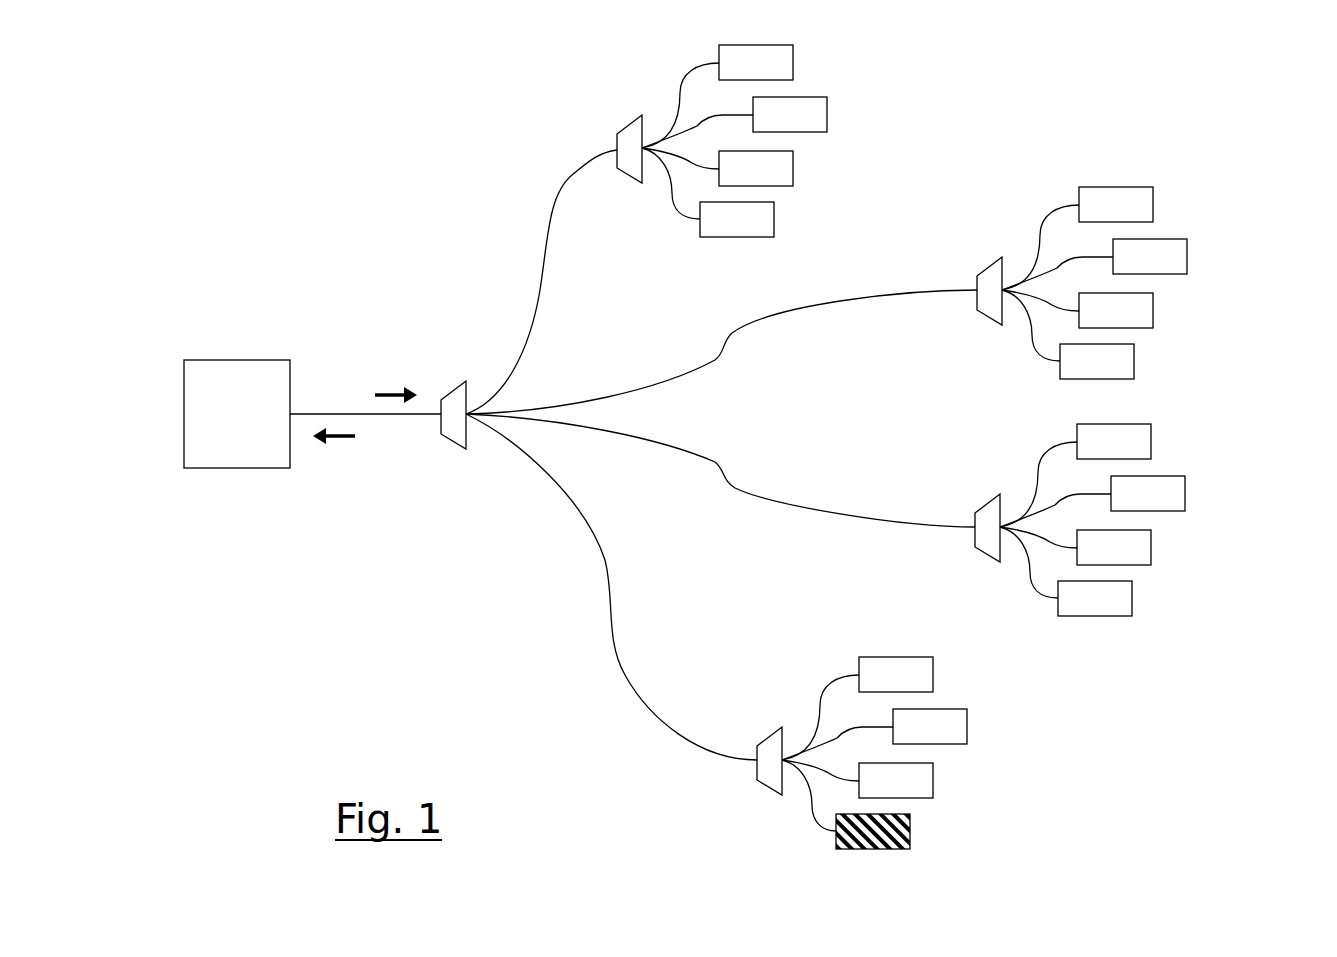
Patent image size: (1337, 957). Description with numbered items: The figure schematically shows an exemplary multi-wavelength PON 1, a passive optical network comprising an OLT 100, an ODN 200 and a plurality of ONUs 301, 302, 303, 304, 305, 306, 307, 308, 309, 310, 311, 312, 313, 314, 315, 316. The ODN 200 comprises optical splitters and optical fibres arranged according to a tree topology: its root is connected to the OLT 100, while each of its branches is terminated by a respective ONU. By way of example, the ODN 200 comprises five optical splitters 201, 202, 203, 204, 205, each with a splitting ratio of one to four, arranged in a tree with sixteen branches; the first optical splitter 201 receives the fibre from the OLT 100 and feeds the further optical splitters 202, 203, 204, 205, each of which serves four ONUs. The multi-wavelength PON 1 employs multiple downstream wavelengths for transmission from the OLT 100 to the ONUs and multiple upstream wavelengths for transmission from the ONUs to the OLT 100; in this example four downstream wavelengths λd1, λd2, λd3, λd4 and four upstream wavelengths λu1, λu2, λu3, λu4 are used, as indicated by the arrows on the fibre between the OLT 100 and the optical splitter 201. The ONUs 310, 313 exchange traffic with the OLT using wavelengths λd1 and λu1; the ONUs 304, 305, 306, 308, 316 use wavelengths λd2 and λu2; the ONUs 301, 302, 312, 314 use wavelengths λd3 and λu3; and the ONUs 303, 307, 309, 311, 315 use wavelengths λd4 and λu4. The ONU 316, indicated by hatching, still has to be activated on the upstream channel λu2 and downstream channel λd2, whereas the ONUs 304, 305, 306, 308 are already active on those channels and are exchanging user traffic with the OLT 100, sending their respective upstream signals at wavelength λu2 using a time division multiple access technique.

The multi-wavelength PON 1 is at (461, 160).
The OLT 100 is at (240, 359).
The ODN 200 is at (555, 533).
The optical splitter 201 is at (453, 388).
The optical splitter 202 is at (629, 122).
The optical splitter 203 is at (989, 264).
The optical splitter 204 is at (987, 501).
The optical splitter 205 is at (769, 734).
The ONU 301 is at (793, 62).
The ONU 302 is at (827, 114).
The ONU 303 is at (793, 168).
The ONU 304 is at (774, 219).
The ONU 305 is at (1153, 204).
The ONU 306 is at (1187, 256).
The ONU 307 is at (1153, 310).
The ONU 308 is at (1134, 361).
The ONU 309 is at (1151, 441).
The ONU 310 is at (1185, 493).
The ONU 311 is at (1151, 547).
The ONU 312 is at (1132, 598).
The ONU 313 is at (933, 674).
The ONU 314 is at (967, 726).
The ONU 315 is at (933, 780).
The ONU 316 is at (910, 831).